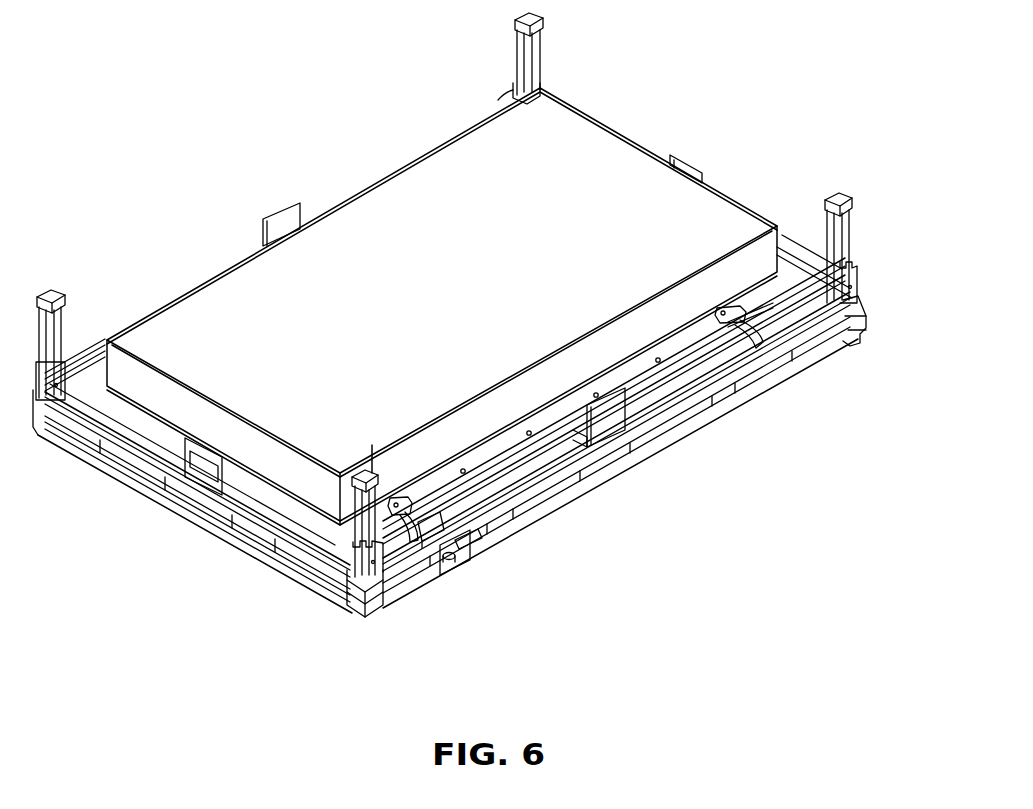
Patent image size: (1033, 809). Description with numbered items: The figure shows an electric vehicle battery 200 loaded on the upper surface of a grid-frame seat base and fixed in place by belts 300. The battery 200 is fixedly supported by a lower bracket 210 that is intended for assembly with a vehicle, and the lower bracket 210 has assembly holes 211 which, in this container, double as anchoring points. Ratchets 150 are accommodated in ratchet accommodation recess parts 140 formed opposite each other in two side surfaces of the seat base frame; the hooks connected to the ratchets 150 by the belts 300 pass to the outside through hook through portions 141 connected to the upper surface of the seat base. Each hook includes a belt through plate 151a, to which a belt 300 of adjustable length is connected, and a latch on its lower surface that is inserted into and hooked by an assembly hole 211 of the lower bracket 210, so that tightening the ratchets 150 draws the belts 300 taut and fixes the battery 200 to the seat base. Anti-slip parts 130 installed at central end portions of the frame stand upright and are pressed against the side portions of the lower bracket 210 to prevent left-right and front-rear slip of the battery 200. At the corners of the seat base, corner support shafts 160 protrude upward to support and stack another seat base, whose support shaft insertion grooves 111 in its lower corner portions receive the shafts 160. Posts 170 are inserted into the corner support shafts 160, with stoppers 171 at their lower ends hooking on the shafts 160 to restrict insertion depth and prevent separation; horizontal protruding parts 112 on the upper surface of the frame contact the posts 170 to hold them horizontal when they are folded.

The support shaft insertion groove 111 is at (353, 617).
The horizontal protruding part 112 is at (437, 527).
The anti-slip part 130 is at (298, 202).
The ratchet accommodation recess part 140 is at (465, 560).
The hook through portion 141 is at (470, 548).
The ratchet 150 is at (447, 560).
The belt through plate 151a is at (390, 500).
The corner support shaft 160 is at (858, 287).
The post 170 is at (846, 233).
The stopper 171 is at (853, 257).
The electric vehicle battery 200 is at (225, 322).
The lower bracket 210 is at (497, 452).
The assembly hole 211 is at (540, 443).
The belt 300 is at (350, 580).